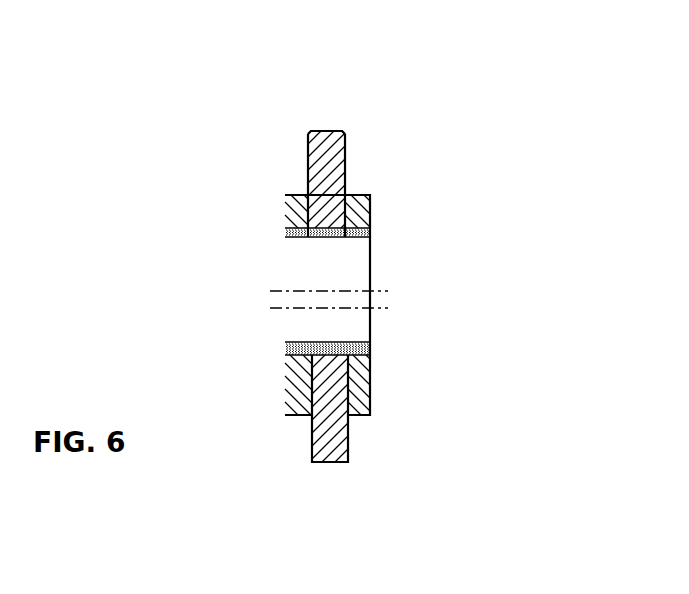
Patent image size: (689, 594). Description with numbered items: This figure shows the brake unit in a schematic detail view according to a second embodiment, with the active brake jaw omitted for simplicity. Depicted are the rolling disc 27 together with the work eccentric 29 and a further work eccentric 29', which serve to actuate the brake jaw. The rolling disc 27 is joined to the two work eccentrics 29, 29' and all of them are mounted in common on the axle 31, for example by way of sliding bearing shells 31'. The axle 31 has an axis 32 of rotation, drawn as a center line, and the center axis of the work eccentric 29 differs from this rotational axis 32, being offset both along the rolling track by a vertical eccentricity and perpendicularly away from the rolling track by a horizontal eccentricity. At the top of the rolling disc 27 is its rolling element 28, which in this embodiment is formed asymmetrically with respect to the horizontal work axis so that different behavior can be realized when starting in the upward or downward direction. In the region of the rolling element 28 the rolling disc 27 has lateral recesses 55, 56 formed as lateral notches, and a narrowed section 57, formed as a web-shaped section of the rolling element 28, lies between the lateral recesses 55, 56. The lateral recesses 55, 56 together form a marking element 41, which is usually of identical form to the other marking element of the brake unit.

The rolling disc 27 is at (347, 177).
The rolling element 28 is at (318, 131).
The work eccentric 29 is at (439, 408).
The further work eccentric 29' is at (261, 379).
The axle 31 is at (430, 305).
The sliding bearing shells 31' is at (424, 213).
The axis of rotation 32 is at (372, 291).
The marking element 41 is at (306, 135).
The lateral recess 55 is at (347, 132).
The lateral recess 56 is at (215, 104).
The narrowed section 57 is at (333, 131).